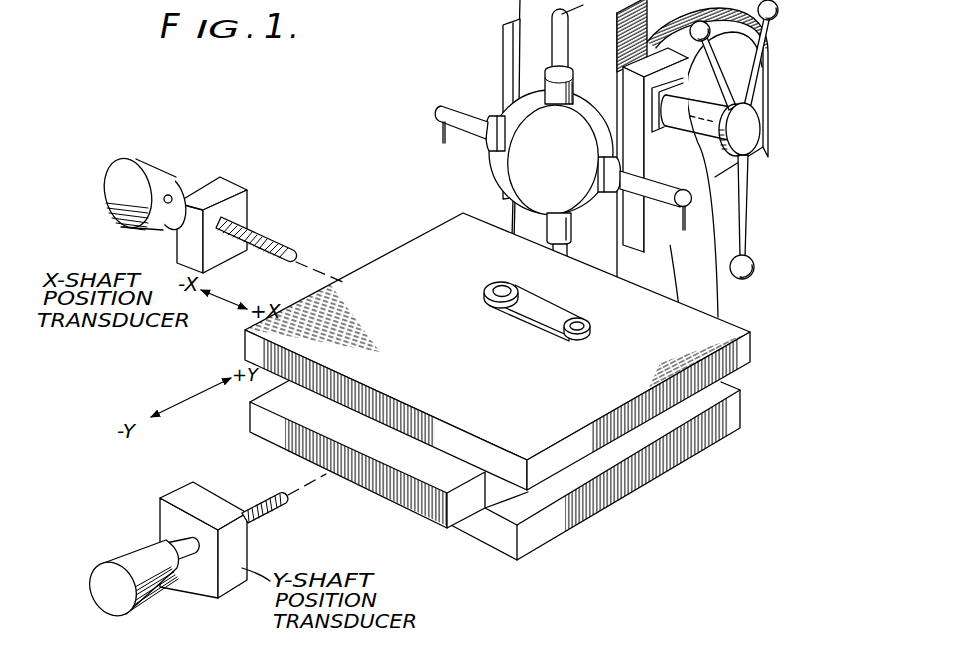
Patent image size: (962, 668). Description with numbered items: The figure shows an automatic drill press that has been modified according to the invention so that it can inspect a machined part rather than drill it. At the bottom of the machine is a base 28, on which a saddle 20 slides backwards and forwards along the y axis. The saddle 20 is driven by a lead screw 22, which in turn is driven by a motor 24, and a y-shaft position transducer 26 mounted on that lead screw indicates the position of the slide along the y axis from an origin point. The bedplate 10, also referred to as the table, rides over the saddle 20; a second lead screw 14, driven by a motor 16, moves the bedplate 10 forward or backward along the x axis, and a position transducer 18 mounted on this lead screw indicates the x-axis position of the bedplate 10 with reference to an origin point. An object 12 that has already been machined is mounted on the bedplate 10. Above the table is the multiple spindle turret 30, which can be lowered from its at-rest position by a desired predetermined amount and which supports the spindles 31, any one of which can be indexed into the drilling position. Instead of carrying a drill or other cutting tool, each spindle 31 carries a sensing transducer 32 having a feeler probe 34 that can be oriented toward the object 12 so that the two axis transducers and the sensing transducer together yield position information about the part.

The bedplate 10 is at (748, 343).
The object 12 is at (564, 325).
The lead screw 14 is at (273, 237).
The motor 16 is at (148, 165).
The position transducer 18 is at (240, 187).
The saddle 20 is at (415, 498).
The lead screw 22 is at (259, 500).
The motor 24 is at (143, 606).
The y-shaft position transducer 26 is at (173, 493).
The base 28 is at (633, 472).
The multiple spindle turret 30 is at (518, 168).
The spindle 31 is at (553, 258).
The sensing transducer 32 is at (569, 288).
The feeler probe 34 is at (545, 300).